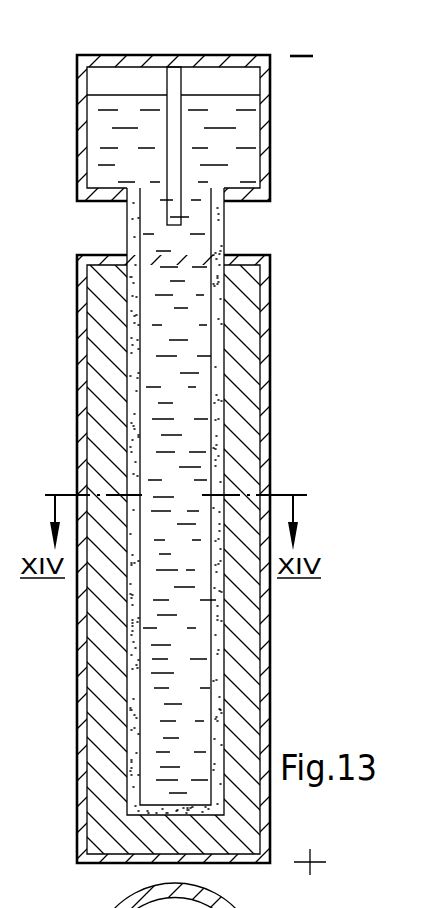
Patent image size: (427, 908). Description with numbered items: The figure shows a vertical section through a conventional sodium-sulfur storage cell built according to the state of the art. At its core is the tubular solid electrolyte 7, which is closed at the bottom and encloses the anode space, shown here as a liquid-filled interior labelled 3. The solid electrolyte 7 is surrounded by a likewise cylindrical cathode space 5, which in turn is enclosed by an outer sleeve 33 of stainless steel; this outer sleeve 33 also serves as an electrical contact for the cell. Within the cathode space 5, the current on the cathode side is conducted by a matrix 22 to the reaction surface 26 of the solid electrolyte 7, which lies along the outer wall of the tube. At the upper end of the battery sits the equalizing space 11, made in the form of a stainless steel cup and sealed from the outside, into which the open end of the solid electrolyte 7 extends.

The equalizing space 11 is at (254, 125).
The tubular solid electrolyte 7 is at (224, 320).
The reaction surface 26 is at (232, 384).
The cathode space 5 is at (243, 428).
The liquid 3 is at (181, 432).
The outer sleeve 33 is at (271, 623).
The matrix 22 is at (247, 667).